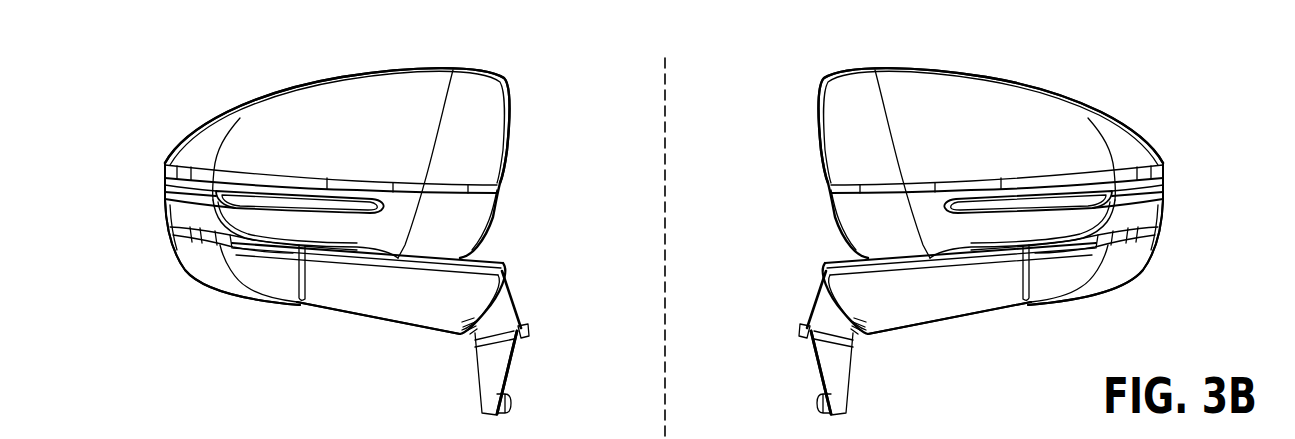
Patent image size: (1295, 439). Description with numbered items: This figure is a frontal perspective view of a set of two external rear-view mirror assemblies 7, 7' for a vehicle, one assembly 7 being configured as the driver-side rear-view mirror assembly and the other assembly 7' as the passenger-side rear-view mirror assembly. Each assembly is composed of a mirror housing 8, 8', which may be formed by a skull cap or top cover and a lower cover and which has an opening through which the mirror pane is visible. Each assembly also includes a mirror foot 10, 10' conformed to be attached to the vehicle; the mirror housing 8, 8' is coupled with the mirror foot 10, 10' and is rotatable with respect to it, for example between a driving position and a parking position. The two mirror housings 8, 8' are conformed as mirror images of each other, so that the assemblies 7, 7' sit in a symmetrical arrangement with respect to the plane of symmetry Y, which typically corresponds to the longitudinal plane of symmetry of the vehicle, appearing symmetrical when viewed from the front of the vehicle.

The rear-view mirror assembly 7 is at (1020, 233).
The rear-view mirror assembly 7' is at (286, 237).
The mirror housing 8 is at (990, 162).
The mirror housing 8' is at (337, 161).
The mirror foot 10 is at (947, 329).
The mirror foot 10' is at (380, 329).
The plane of symmetry Y is at (667, 228).